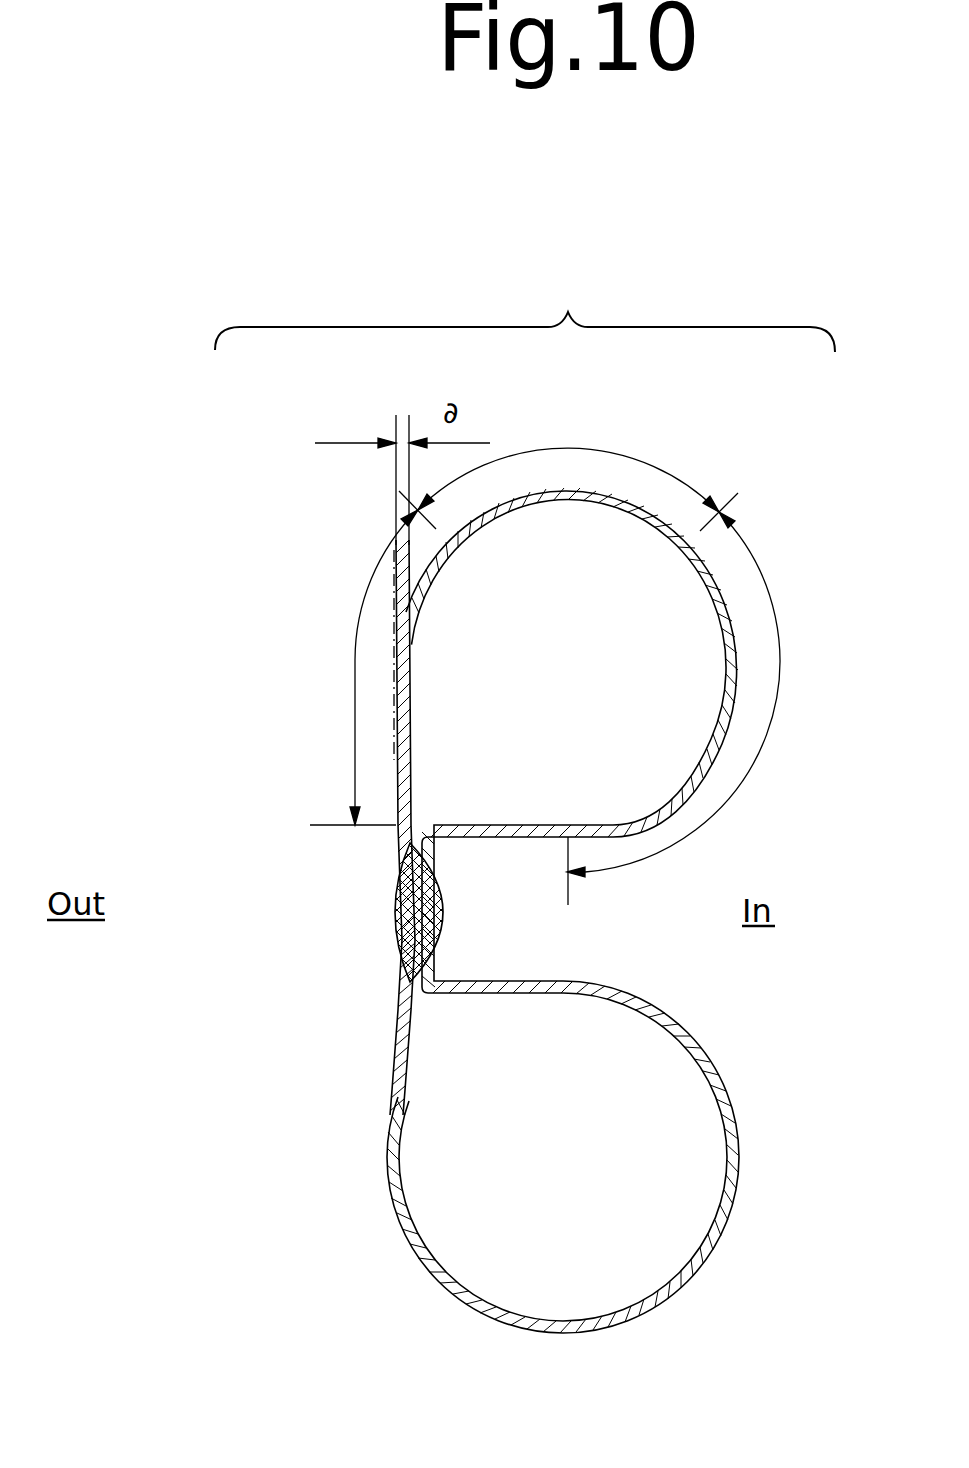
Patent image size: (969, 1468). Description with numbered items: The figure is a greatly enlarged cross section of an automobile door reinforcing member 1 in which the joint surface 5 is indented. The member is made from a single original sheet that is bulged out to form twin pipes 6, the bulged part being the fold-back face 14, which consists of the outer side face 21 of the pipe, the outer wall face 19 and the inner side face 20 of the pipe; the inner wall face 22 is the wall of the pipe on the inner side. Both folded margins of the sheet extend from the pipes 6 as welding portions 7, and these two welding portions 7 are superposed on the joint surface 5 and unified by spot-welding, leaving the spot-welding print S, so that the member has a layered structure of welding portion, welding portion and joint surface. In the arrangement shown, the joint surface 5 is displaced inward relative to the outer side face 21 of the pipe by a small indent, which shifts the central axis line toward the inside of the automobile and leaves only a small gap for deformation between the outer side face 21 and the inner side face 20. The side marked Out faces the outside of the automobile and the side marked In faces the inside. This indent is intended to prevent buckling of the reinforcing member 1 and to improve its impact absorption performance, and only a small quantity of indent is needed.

The automobile door reinforcing member 1 is at (325, 925).
The joint surface 5 is at (393, 960).
The pipe 6 is at (584, 685).
The welding portion 7 is at (432, 872).
The fold-back face 14 is at (525, 311).
The outer wall face 19 is at (565, 448).
The inner side face of the pipe 20 is at (778, 640).
The outer side face of the pipe 21 is at (360, 607).
The inner wall face 22 is at (480, 838).
The spot-welding print S is at (393, 925).